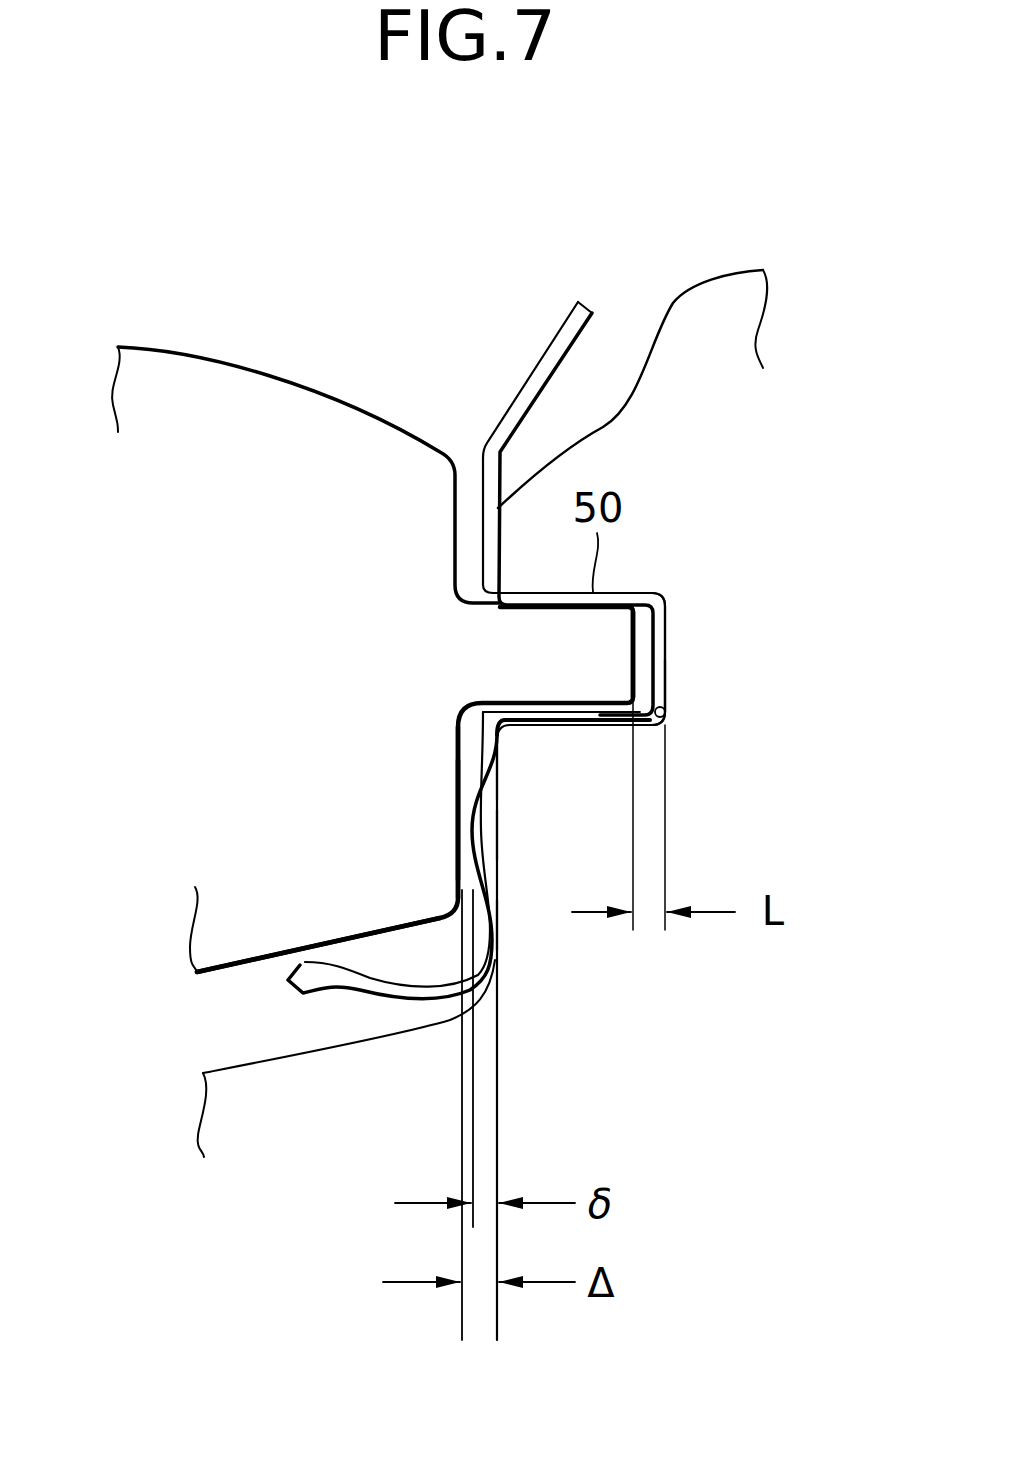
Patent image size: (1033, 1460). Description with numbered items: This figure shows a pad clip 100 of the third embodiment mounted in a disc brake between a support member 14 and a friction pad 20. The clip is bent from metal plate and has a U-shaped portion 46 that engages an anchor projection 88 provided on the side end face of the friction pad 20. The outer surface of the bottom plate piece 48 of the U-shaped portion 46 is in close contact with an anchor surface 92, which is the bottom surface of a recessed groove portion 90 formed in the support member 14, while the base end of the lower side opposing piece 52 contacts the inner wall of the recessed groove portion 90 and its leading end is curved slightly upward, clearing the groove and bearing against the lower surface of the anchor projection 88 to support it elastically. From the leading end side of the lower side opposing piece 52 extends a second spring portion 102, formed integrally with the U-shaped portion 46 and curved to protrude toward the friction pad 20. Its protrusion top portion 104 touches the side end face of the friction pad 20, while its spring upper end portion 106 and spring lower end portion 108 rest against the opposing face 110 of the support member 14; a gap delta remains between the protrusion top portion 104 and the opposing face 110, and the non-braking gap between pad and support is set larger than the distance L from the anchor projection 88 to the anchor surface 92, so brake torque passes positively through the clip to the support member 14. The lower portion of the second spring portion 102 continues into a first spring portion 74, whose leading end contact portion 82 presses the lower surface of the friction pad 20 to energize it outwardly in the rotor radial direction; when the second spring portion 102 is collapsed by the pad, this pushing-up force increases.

The support member 14 is at (706, 250).
The friction pad 20 is at (280, 333).
The pad clip 100 is at (512, 337).
The U-shaped portion 46 is at (675, 567).
The bottom plate piece 48 is at (667, 647).
The lower side opposing piece 52 is at (553, 725).
The anchor projection 88 is at (623, 638).
The recessed groove portion 90 is at (667, 683).
The anchor surface 92 is at (667, 717).
The second spring portion 102 is at (425, 785).
The protrusion top portion 104 is at (457, 837).
The spring upper end portion 106 is at (498, 760).
The spring lower end portion 108 is at (495, 920).
The opposing face 110 is at (498, 828).
The leading end contact portion 82 is at (302, 950).
The first spring portion 74 is at (372, 1040).